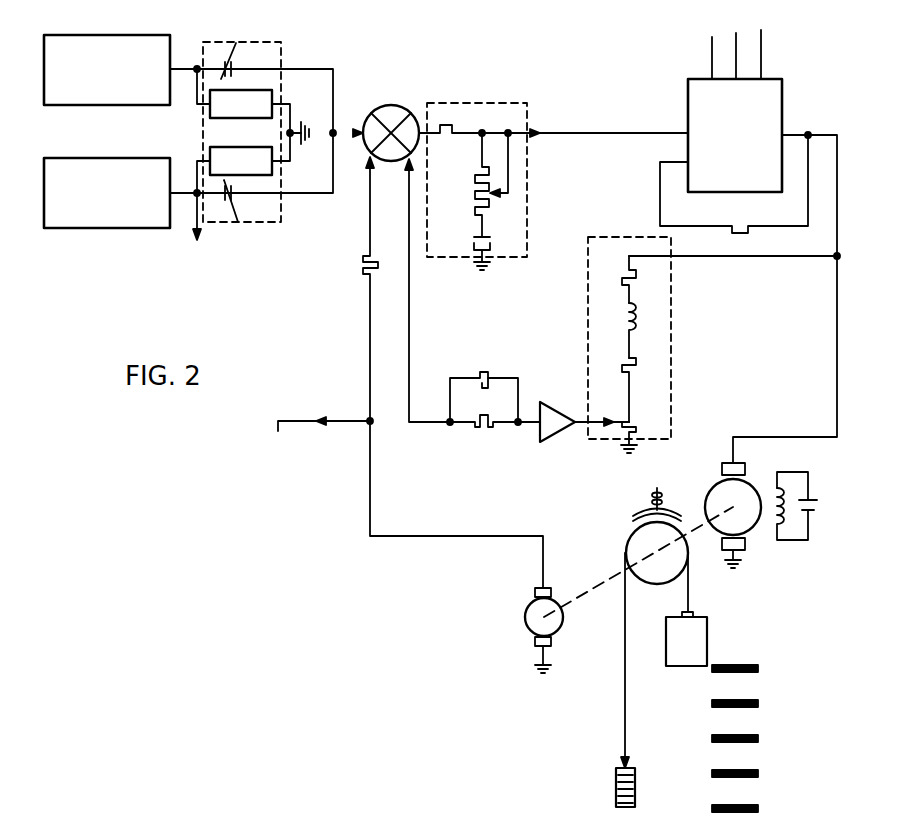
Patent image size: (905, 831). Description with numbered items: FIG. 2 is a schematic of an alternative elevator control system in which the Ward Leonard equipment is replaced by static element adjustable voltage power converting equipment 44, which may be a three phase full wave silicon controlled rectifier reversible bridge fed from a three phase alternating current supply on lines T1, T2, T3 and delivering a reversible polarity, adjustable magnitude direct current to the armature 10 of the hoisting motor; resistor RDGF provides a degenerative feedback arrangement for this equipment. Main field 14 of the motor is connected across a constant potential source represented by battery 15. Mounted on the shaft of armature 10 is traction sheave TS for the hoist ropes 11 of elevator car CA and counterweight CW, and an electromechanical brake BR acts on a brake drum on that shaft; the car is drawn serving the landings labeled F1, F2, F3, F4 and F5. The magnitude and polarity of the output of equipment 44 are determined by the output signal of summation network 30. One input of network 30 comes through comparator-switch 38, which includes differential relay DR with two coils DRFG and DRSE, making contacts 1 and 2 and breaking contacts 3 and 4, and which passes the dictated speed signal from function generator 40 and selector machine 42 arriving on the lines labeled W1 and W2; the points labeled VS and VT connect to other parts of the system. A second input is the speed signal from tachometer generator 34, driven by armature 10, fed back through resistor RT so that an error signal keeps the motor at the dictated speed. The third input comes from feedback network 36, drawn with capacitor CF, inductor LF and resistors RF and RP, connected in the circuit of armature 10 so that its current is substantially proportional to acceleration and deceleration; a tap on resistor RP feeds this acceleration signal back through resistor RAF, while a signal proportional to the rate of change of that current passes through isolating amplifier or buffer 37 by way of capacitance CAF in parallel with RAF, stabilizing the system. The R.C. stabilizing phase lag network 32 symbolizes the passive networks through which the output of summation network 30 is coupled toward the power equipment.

The armature 10 is at (755, 530).
The hoist ropes 11 is at (686, 592).
The main field 14 is at (790, 500).
The battery 15 is at (818, 506).
The summation network 30 is at (386, 104).
The R.C. stabilizing phase lag network 32 is at (553, 166).
The tachometer generator 34 is at (526, 610).
The feedback network 36 is at (712, 345).
The isolating amplifier or buffer 37 is at (557, 436).
The comparator-switch 38 is at (268, 134).
The function generator 40 is at (107, 91).
The selector machine 42 is at (107, 216).
The static element adjustable voltage power converting equipment 44 is at (761, 101).
The relay contact 1 is at (218, 204).
The relay contact 2 is at (240, 204).
The relay contact 3 is at (217, 60).
The relay contact 4 is at (240, 60).
The signal wire W1 is at (188, 64).
The signal wire W2 is at (188, 189).
The differential relay DR is at (242, 46).
The differential relay coil DRFG is at (241, 104).
The differential relay coil DRSE is at (241, 161).
The signal VS (FIG.8) VS is at (195, 240).
The signal VT (FIG.8) VT is at (278, 431).
The resistor RT is at (362, 263).
The supply line T1 is at (712, 44).
The supply line T2 is at (745, 32).
The supply line T3 is at (761, 44).
The resistor RDGF is at (734, 184).
The capacitor CF is at (627, 276).
The inductor LF is at (623, 326).
The resistor RF is at (622, 366).
The resistor RP is at (633, 428).
The capacitance CAF is at (482, 377).
The resistance RAF is at (477, 428).
The electromechanical brake BR is at (650, 506).
The traction sheave TS is at (626, 548).
The elevator car CA is at (708, 627).
The counterweight CW is at (645, 786).
The floor 1 F1 is at (752, 808).
The floor 2 F2 is at (752, 773).
The floor 3 F3 is at (752, 738).
The floor 4 F4 is at (752, 703).
The floor 5 F5 is at (752, 668).